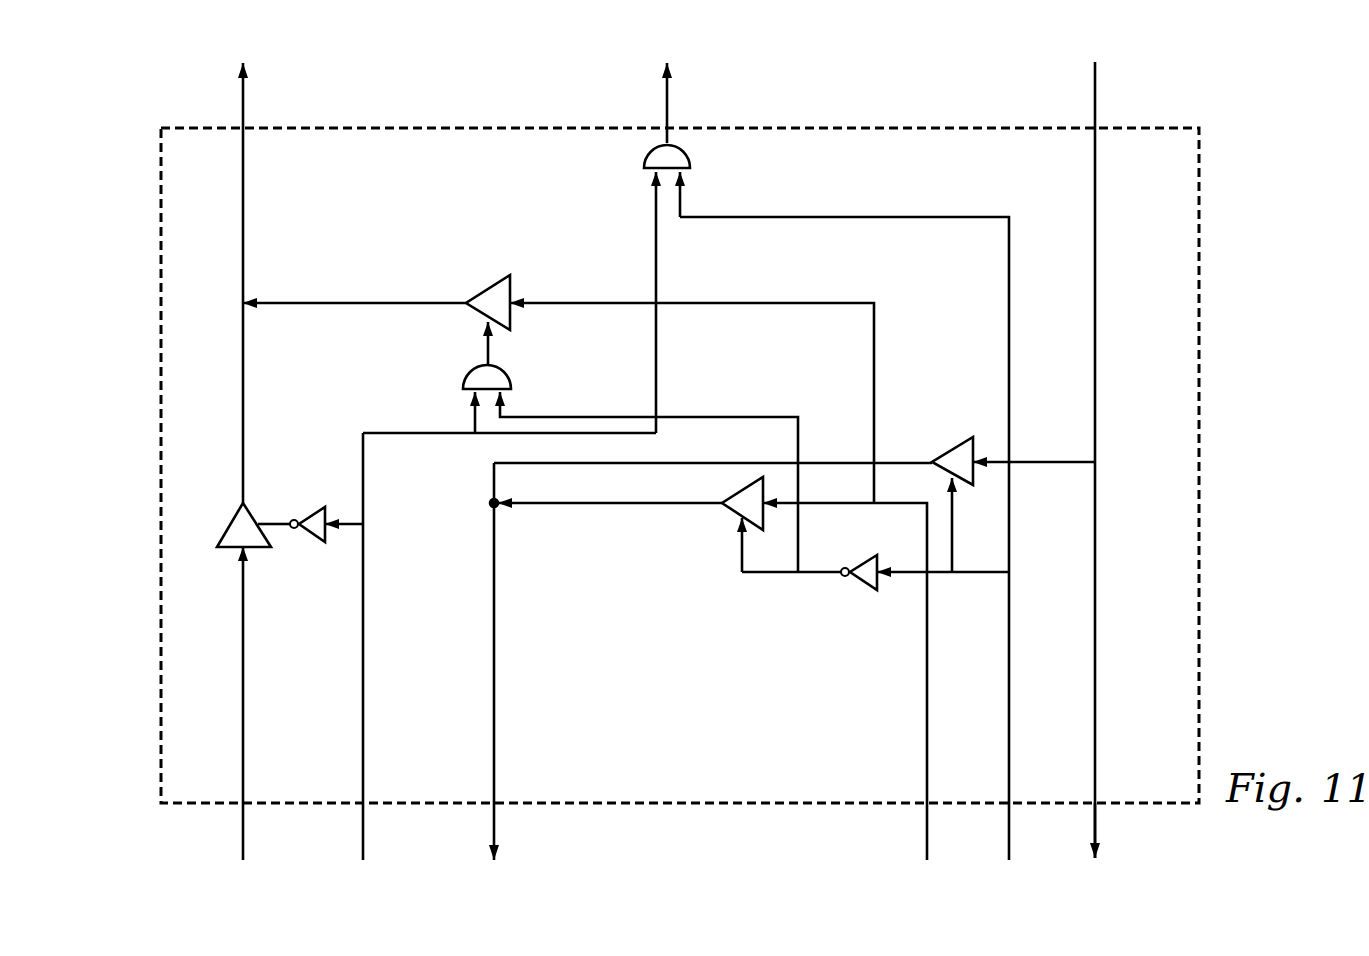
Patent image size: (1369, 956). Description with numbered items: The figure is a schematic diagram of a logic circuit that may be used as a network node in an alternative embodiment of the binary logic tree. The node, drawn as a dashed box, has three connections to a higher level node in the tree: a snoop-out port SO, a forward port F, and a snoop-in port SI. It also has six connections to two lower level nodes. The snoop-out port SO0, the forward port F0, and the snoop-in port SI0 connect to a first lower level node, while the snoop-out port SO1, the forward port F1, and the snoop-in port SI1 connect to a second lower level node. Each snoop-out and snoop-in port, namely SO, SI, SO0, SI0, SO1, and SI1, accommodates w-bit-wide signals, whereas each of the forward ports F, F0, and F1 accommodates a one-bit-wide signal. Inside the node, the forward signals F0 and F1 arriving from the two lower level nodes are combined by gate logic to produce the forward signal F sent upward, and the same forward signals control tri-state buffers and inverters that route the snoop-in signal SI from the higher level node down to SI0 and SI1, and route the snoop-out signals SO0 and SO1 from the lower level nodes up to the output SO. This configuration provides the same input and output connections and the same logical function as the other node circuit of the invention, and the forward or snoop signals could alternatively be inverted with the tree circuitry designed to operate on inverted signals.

The snoop-out connection to higher level node SO is at (244, 269).
The snoop-out connection to second lower level node SO1 is at (246, 723).
The forward connection to higher level node F is at (668, 89).
The snoop-in connection to higher level node SI is at (1096, 446).
The snoop-in connection to first lower level node SI0 is at (1100, 851).
The snoop-in connection to second lower level node SI1 is at (496, 681).
The forward connection to first lower level node F0 is at (851, 558).
The forward connection to second lower level node F1 is at (367, 666).
The snoop-out connection to first lower level node SO0 is at (857, 698).